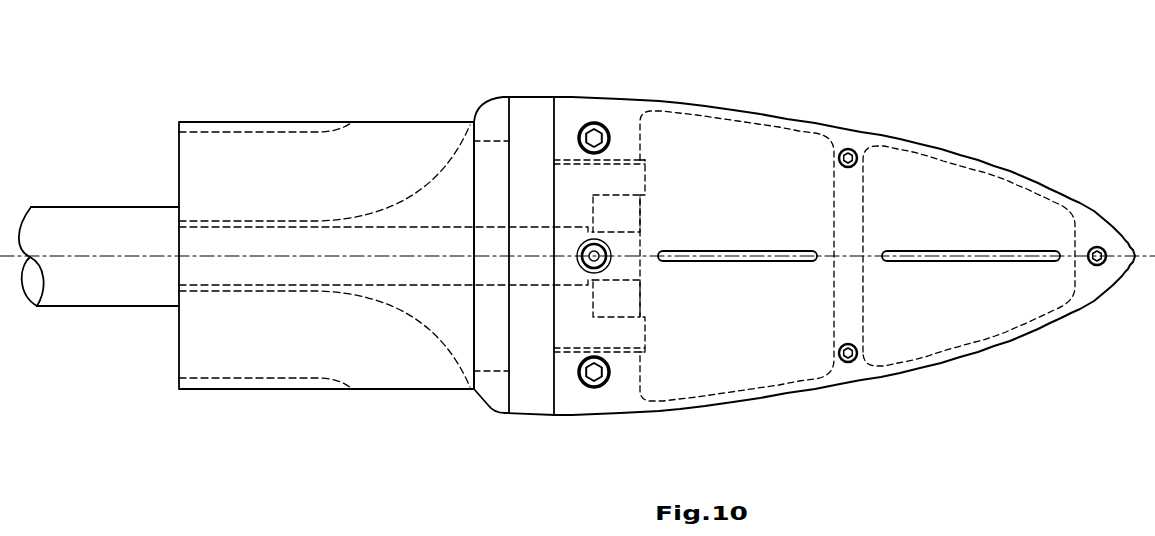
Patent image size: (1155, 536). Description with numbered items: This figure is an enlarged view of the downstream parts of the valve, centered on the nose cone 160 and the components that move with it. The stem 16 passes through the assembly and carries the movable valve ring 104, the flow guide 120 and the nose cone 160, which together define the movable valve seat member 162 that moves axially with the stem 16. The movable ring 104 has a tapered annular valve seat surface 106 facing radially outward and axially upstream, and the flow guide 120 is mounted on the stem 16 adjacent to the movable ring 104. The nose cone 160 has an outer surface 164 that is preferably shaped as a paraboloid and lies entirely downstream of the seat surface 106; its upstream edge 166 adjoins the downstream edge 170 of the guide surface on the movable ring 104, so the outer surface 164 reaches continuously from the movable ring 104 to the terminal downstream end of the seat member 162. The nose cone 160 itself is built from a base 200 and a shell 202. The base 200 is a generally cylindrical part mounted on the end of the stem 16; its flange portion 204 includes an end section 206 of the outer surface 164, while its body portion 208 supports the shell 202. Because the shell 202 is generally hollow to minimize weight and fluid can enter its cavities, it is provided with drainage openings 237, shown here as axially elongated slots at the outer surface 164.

The stem 16 is at (77, 206).
The movable valve ring 104 is at (492, 180).
The tapered annular valve seat surface 106 is at (474, 118).
The flow guide 120 is at (265, 112).
The nose cone 160 is at (970, 152).
The movable valve seat member 162 is at (323, 66).
The outer surface 164 is at (645, 100).
The upstream edge 166 is at (508, 380).
The downstream edge 170 is at (510, 397).
The base 200 is at (466, 322).
The shell 202 is at (722, 406).
The flange portion 204 is at (554, 118).
The end section 206 is at (532, 97).
The body portion 208 is at (610, 381).
The drainage openings 237 is at (733, 250).